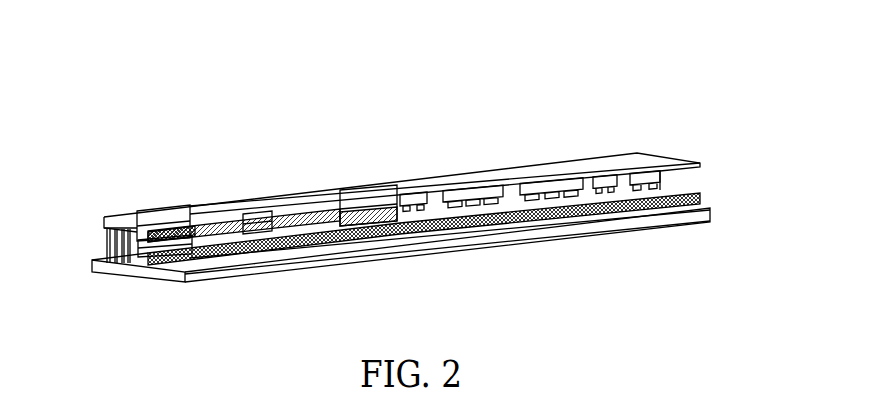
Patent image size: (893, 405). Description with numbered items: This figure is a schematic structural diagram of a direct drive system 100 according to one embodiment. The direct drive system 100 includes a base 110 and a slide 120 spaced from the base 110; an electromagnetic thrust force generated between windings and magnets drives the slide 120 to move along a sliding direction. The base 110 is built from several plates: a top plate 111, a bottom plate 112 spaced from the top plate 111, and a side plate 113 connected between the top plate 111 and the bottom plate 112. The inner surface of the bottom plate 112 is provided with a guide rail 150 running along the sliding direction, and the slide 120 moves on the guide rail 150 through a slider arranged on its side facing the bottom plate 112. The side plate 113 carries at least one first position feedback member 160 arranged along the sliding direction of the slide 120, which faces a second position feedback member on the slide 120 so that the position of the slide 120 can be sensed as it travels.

The direct drive system 100 is at (407, 47).
The base 110 is at (772, 115).
The top plate 111 is at (637, 153).
The bottom plate 112 is at (713, 221).
The side plate 113 is at (662, 190).
The slide 120 is at (203, 212).
The guide rail 150 is at (140, 263).
The first position feedback member 160 is at (448, 210).